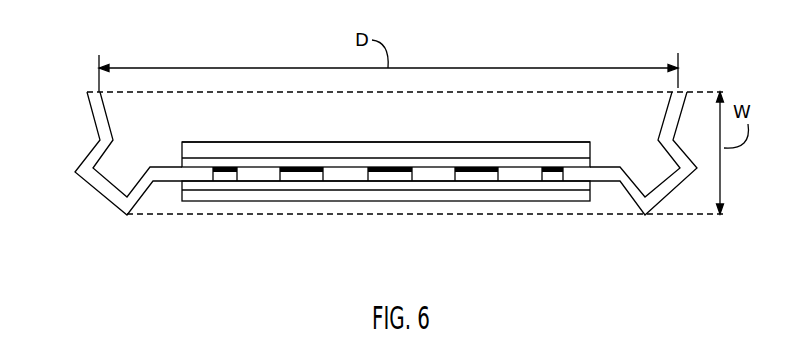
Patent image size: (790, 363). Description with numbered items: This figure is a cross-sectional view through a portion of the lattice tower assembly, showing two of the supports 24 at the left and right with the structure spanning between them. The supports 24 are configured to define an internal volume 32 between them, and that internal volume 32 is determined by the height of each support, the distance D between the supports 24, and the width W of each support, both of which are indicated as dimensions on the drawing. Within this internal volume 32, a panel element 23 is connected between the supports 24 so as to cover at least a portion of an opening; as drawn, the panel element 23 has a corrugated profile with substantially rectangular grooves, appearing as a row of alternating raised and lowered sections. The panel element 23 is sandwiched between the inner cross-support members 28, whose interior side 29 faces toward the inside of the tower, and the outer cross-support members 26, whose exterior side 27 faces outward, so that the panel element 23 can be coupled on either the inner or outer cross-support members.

The supports 24 is at (93, 150).
The inner cross-support members 28 is at (512, 148).
The interior side 29 is at (322, 142).
The internal volume 32 is at (391, 125).
The panel elements 23 is at (264, 182).
The exterior side 27 is at (416, 202).
The outer cross-support members 26 is at (512, 195).